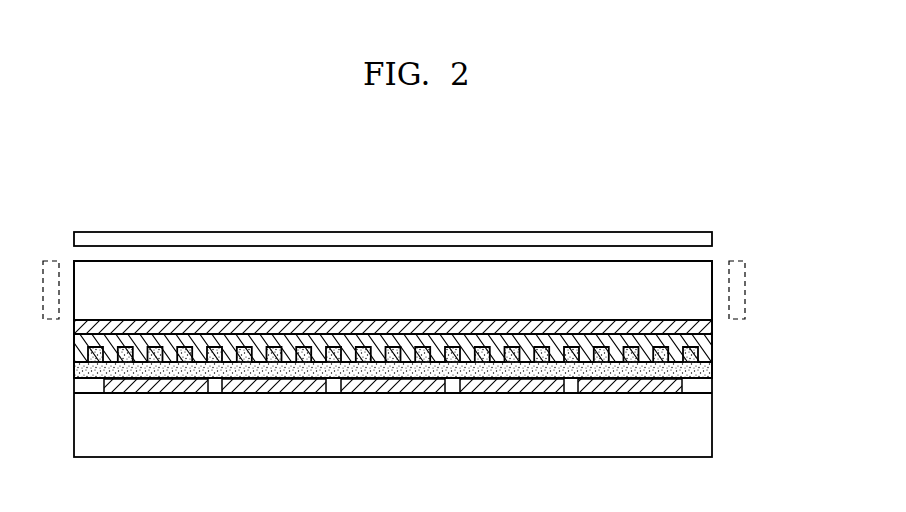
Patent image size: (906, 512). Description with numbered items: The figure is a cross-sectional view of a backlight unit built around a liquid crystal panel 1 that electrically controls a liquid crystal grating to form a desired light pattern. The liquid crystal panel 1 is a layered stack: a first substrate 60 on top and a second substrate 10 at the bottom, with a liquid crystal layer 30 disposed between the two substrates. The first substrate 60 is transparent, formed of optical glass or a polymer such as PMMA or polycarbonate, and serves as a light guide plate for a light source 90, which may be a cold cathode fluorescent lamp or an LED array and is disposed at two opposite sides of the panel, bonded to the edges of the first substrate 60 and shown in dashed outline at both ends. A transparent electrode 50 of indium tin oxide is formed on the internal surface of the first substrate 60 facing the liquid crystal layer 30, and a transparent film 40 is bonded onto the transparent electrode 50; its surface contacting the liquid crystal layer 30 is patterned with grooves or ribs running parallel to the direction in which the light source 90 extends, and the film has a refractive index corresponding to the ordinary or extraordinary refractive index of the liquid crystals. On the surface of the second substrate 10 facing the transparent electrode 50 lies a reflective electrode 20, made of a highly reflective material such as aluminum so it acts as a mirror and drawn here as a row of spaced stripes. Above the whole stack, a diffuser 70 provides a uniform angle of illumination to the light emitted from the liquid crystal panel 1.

The liquid crystal panel 1 is at (710, 207).
The second substrate 10 is at (712, 425).
The reflective electrode 20 is at (630, 393).
The liquid crystal layer 30 is at (710, 370).
The transparent film 40 is at (712, 348).
The transparent electrode 50 is at (712, 327).
The first substrate 60 is at (710, 300).
The diffuser 70 is at (712, 241).
The light source 90 is at (51, 268).